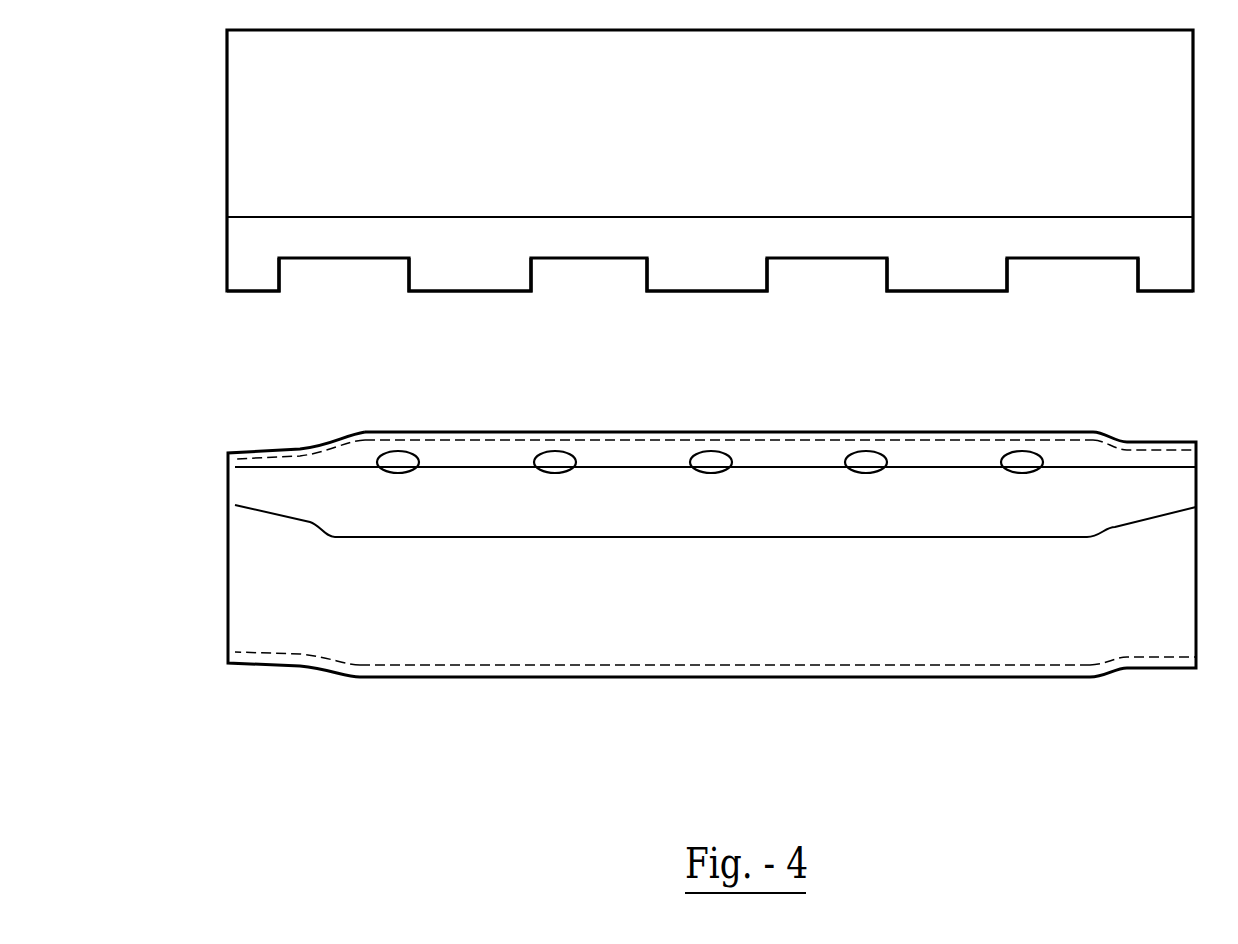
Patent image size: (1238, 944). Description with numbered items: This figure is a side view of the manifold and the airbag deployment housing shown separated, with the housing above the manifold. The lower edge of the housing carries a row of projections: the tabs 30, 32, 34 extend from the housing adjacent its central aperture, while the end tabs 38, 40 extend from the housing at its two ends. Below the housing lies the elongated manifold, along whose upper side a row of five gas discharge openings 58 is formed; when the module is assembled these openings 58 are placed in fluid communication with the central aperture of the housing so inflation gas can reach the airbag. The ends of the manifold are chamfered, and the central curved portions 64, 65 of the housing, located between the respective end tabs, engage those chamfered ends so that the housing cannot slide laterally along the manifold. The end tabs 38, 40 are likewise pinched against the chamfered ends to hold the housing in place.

The tab 30 is at (940, 283).
The tab 32 is at (737, 283).
The tab 34 is at (488, 283).
The end tab 38 is at (1170, 281).
The end tab 40 is at (261, 281).
The gas discharge openings 58 is at (1020, 458).
The central curved portion 64 is at (290, 668).
The central curved portion 65 is at (1140, 668).